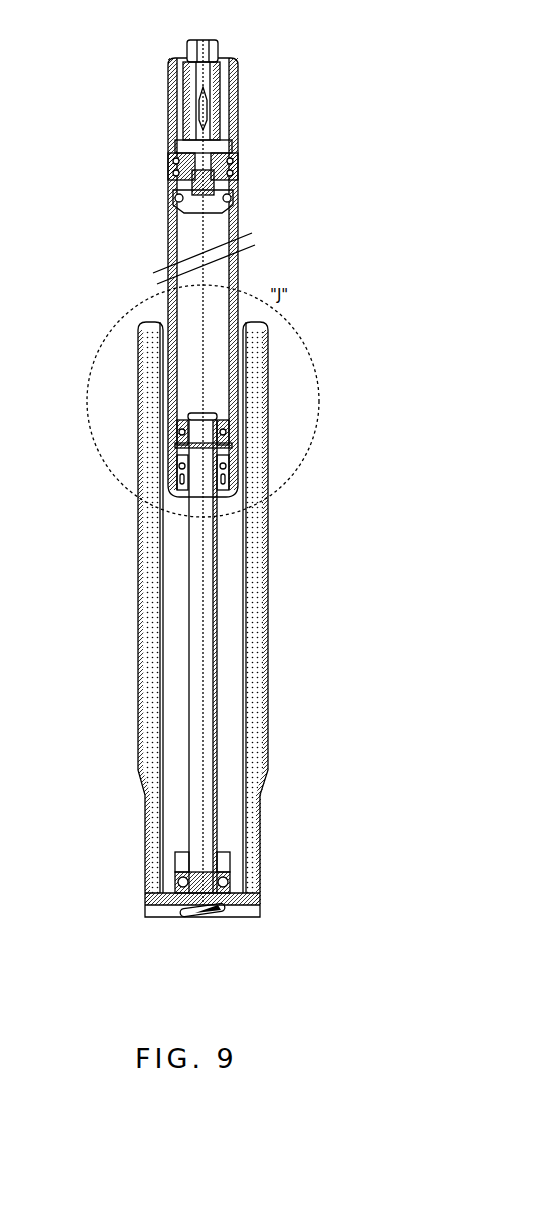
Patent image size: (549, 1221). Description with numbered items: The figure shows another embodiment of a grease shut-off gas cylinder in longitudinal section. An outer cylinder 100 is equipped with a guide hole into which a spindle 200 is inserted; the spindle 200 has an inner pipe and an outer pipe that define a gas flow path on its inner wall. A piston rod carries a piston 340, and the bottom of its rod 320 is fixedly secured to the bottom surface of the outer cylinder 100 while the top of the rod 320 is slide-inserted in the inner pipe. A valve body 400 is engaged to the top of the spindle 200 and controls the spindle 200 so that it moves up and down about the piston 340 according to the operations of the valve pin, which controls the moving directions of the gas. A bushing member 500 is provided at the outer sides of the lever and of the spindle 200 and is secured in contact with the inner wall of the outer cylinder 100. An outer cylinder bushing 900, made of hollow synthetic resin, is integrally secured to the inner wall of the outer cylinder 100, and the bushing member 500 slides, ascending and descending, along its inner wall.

The outer cylinder 100 is at (138, 562).
The spindle 200 is at (167, 236).
The rod 320 is at (205, 598).
The piston 340 is at (238, 410).
The valve body 400 is at (168, 165).
The bushing member 500 is at (238, 372).
The outer cylinder bushing 900 is at (150, 608).